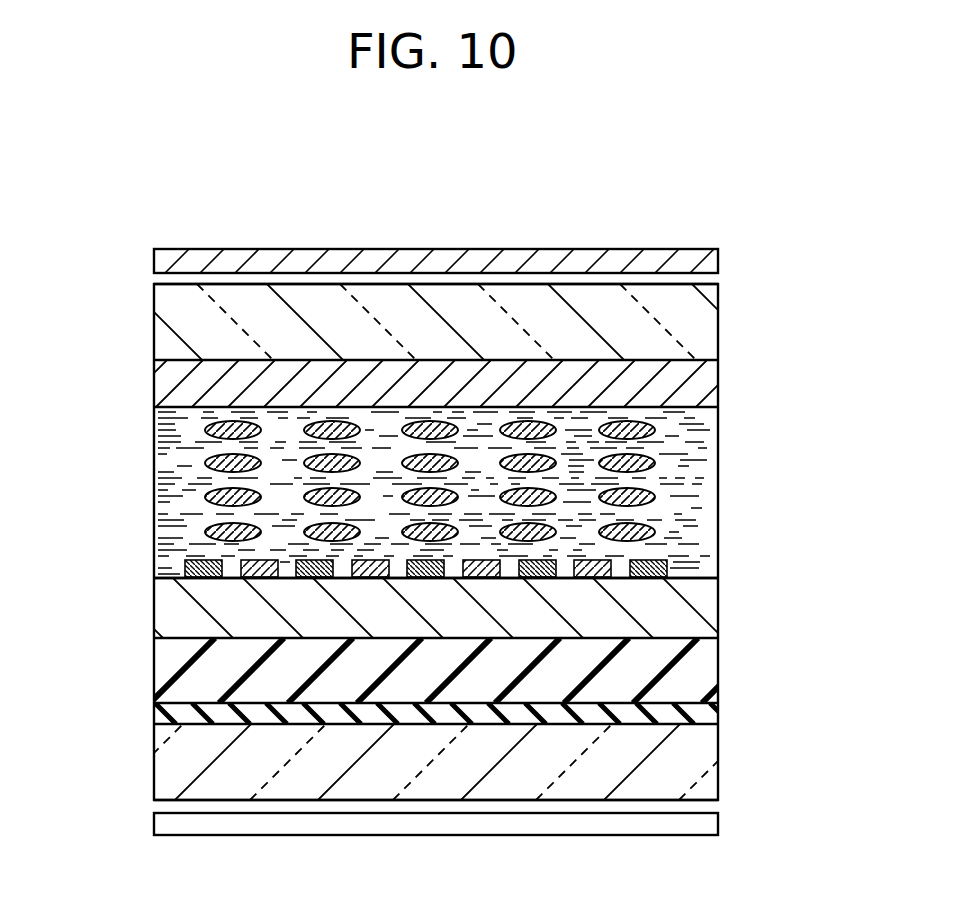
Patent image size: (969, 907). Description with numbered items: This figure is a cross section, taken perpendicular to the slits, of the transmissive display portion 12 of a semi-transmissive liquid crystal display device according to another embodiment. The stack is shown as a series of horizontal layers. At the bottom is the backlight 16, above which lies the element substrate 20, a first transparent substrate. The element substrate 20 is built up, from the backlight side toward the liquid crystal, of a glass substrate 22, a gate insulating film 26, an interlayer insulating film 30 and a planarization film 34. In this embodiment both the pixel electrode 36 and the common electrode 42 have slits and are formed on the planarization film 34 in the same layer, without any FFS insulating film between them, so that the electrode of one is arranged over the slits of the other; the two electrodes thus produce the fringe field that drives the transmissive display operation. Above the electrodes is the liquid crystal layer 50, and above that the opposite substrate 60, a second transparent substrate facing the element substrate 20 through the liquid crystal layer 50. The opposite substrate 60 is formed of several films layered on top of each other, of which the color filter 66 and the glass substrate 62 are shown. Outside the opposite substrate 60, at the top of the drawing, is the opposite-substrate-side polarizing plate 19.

The transmissive display portion 12 is at (674, 190).
The backlight 16 is at (712, 818).
The opposite-substrate-side polarizing plate 19 is at (720, 258).
The element substrate 20 is at (744, 682).
The glass substrate 22 is at (160, 768).
The gate insulating film 26 is at (160, 715).
The interlayer insulating film 30 is at (160, 665).
The planarization film 34 is at (160, 607).
The pixel electrode 36 is at (178, 579).
The common electrode 42 is at (250, 557).
The liquid crystal layer 50 is at (706, 472).
The opposite substrate 60 is at (742, 330).
The glass substrate 62 is at (160, 313).
The color filter 66 is at (160, 388).